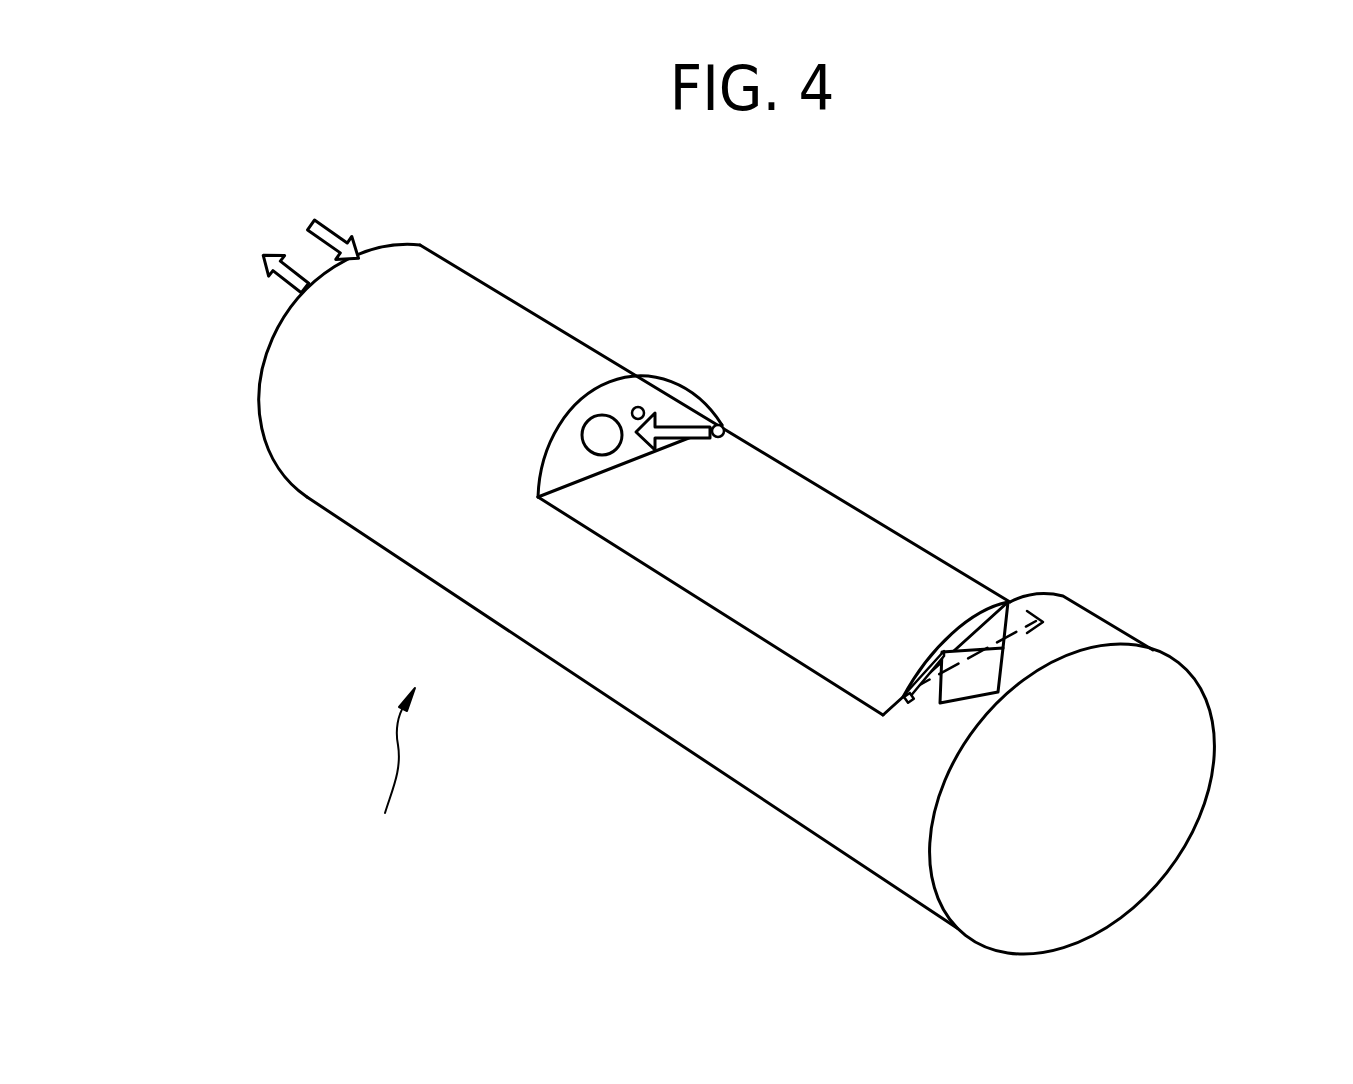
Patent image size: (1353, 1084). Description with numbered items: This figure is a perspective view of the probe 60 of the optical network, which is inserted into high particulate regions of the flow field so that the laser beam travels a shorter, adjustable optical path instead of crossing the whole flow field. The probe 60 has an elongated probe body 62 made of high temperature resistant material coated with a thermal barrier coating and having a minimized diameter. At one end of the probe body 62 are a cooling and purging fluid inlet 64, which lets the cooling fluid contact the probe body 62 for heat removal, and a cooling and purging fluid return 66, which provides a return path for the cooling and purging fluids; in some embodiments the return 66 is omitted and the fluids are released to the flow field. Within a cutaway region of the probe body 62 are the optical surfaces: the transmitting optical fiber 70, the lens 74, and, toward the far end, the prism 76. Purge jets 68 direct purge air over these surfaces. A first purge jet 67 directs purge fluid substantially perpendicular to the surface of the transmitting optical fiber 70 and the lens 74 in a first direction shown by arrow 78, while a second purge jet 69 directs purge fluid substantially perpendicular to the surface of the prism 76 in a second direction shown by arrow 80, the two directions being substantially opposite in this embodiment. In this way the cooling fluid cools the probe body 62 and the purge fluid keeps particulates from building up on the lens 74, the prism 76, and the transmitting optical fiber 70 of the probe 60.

The probe 60 is at (390, 772).
The probe body 62 is at (527, 640).
The cooling and purging fluid inlet 64 is at (334, 230).
The cooling and purging fluid return 66 is at (287, 282).
The first purge jet 67 is at (717, 438).
The purge jets 68 is at (900, 694).
The second purge jet 69 is at (890, 698).
The transmitting optical fiber 70 is at (641, 407).
The lens 74 is at (590, 417).
The prism 76 is at (958, 697).
The arrow 78 is at (664, 442).
The arrow 80 is at (918, 665).